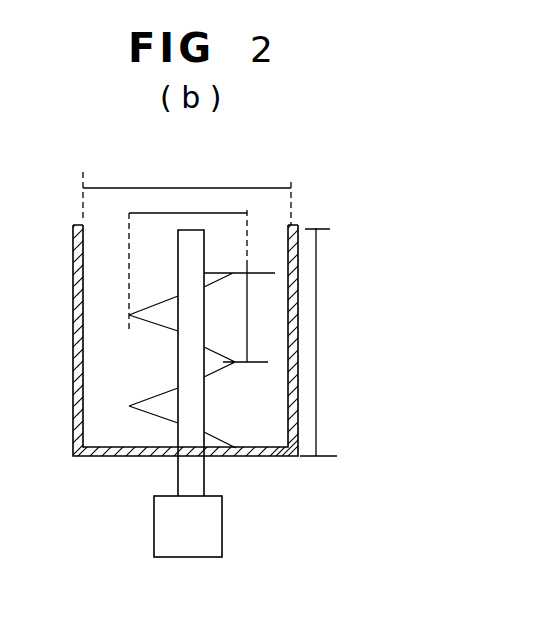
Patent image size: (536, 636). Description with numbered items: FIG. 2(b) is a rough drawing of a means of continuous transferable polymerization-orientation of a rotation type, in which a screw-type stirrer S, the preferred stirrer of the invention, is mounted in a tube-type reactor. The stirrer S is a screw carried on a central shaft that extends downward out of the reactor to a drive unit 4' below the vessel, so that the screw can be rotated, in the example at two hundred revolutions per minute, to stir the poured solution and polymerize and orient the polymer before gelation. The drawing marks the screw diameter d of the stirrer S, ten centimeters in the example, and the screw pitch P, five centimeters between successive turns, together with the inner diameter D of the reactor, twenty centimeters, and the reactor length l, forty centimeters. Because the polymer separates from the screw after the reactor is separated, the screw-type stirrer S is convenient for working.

The inner diameter of reactor D is at (162, 188).
The screw diameter d is at (200, 211).
The screw-type stirrer S is at (155, 329).
The screw pitch P is at (245, 322).
The length of reactor l is at (316, 410).
The motor / drive unit 4' is at (218, 526).